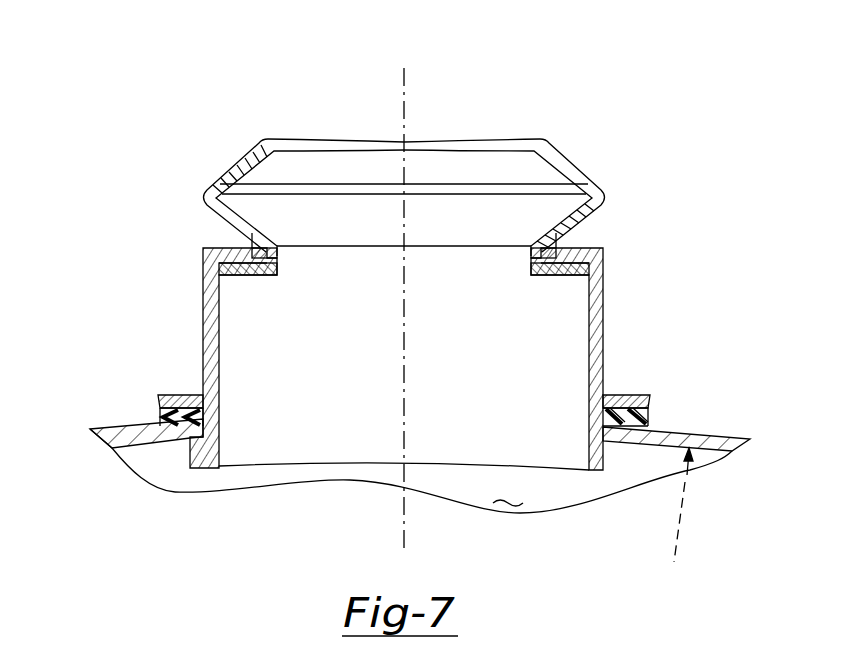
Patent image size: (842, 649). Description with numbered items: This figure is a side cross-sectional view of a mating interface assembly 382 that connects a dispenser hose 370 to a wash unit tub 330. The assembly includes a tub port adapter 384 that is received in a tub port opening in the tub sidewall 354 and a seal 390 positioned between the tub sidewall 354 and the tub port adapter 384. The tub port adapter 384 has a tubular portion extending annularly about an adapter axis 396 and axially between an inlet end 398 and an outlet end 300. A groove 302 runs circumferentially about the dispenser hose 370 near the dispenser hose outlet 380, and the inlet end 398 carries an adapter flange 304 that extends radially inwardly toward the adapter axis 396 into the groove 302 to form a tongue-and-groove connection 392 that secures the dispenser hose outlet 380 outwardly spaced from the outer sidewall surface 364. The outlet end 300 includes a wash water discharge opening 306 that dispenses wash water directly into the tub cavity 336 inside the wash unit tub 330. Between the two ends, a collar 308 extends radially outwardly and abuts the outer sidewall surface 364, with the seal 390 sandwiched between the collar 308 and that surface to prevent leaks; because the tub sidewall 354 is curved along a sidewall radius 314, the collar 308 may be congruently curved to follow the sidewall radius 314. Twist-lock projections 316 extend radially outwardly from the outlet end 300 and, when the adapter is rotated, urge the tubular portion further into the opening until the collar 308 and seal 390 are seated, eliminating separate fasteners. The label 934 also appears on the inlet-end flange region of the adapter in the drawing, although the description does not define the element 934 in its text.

The outlet end 300 is at (596, 474).
The groove 302 is at (544, 258).
The adapter flange 304 is at (277, 258).
The wash water discharge opening 306 is at (321, 438).
The collar 308 is at (187, 396).
The sidewall radius 314 is at (683, 530).
The twist-lock projections 316 is at (127, 467).
The wash unit tub 330 is at (171, 478).
The tub cavity 336 is at (509, 488).
The tub sidewall 354 is at (113, 430).
The outer sidewall surface 364 is at (726, 436).
The dispenser hose 370 is at (577, 162).
The dispenser hose outlet 380 is at (280, 268).
The mating interface assembly 382 is at (116, 97).
The tub port adapter 384 is at (609, 282).
The seal 390 is at (163, 420).
The tongue-and-groove connection 392 is at (224, 237).
The adapter axis 396 is at (404, 104).
The inlet end 398 is at (607, 246).
The flange 934 is at (208, 277).